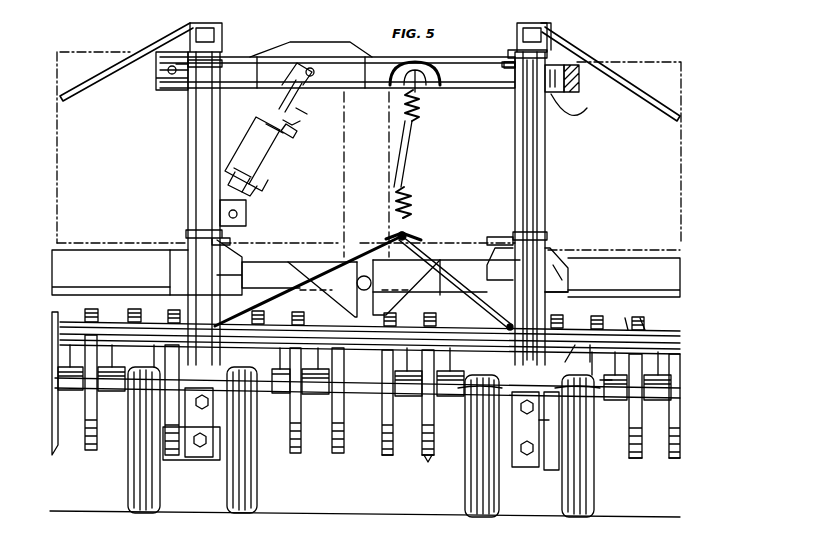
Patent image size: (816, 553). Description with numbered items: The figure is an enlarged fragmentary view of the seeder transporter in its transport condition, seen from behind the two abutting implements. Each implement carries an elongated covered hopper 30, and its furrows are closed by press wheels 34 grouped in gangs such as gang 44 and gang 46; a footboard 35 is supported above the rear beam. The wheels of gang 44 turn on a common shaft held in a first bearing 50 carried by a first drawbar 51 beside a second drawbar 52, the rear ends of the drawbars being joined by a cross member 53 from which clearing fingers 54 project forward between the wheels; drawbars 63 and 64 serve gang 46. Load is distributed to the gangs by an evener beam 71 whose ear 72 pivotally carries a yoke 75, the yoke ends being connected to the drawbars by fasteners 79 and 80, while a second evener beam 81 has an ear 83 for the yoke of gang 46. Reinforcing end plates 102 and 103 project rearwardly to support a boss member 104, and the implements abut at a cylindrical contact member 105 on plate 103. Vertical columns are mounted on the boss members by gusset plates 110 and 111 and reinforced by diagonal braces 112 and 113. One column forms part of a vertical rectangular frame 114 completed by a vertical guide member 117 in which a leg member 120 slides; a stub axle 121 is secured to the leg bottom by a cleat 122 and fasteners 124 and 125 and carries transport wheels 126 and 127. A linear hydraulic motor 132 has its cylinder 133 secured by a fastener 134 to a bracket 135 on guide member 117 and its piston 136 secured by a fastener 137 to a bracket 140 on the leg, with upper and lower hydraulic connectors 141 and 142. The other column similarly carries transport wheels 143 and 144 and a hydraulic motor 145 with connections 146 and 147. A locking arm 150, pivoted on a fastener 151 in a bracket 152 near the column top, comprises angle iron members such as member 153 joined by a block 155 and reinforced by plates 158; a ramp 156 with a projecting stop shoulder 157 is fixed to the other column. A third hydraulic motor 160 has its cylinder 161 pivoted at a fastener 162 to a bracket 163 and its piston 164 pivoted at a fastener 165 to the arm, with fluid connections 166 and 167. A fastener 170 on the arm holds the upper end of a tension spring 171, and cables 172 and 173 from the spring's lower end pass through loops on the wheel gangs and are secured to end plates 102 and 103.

The hopper 30 is at (85, 50).
The press wheel 34 is at (394, 452).
The footboard 35 is at (88, 242).
The wheel gang 44 is at (428, 466).
The wheel gang 46 is at (90, 455).
The first bearing 50 is at (97, 395).
The first drawbar 51 is at (621, 315).
The second drawbar 52 is at (443, 304).
The cross member 53 is at (262, 322).
The clearing fingers 54 is at (650, 330).
The drawbar 63 is at (267, 308).
The drawbar 64 is at (110, 307).
The evener beam 71 is at (640, 288).
The ear 72 is at (557, 302).
The yoke 75 is at (580, 295).
The fastener 79 is at (432, 276).
The fastener 80 is at (634, 318).
The second evener beam 81 is at (127, 306).
The ear 83 is at (172, 308).
The reinforcing end plate 102 is at (432, 252).
The reinforcing end plate 103 is at (322, 297).
The boss member 104 is at (300, 262).
The cylindrical contact member 105 is at (386, 238).
The gusset plate 110 is at (182, 250).
The gusset plate 111 is at (555, 252).
The diagonal brace 112 is at (92, 90).
The diagonal brace 113 is at (665, 112).
The vertical rectangular frame 114 is at (184, 154).
The vertical guide member 117 is at (522, 153).
The leg member 120 is at (501, 264).
The stub axle 121 is at (550, 470).
The cleat 122 is at (551, 430).
The fastener 124 is at (520, 408).
The fastener 125 is at (524, 458).
The transport wheel 126 is at (478, 518).
The transport wheel 127 is at (577, 518).
The linear hydraulic motor 132 is at (522, 183).
The cylinder 133 is at (538, 185).
The fastener 134 is at (522, 42).
The bracket 135 is at (546, 33).
The piston 136 is at (548, 255).
The fastener 137 is at (364, 372).
The bracket 140 is at (614, 400).
The upper connector for hydraulic fluid 141 is at (520, 72).
The lower connector for hydraulic fluid 142 is at (515, 232).
The transport wheel 143 is at (144, 514).
The transport wheel 144 is at (243, 514).
The linear hydraulic motor 145 is at (186, 128).
The connection for hydraulic fluid 146 is at (222, 64).
The connection for hydraulic fluid 147 is at (232, 236).
The locking arm 150 is at (361, 68).
The fastener 151 is at (168, 70).
The bracket 152 is at (167, 88).
The angle iron member 153 is at (290, 82).
The block 155 is at (572, 95).
The ramp 156 is at (569, 117).
The stop shoulder 157 is at (580, 80).
The plate 158 is at (298, 47).
The third linear hydraulic motor 160 is at (264, 148).
The cylinder 161 is at (265, 168).
The fastener 162 is at (229, 214).
The bracket 163 is at (258, 220).
The piston 164 is at (310, 106).
The fastener 165 is at (314, 71).
The connection for hydraulic fluid 166 is at (296, 146).
The connection for hydraulic fluid 167 is at (268, 189).
The fastener 170 is at (430, 82).
The tension spring 171 is at (418, 118).
The cable 172 is at (346, 240).
The cable 173 is at (486, 241).